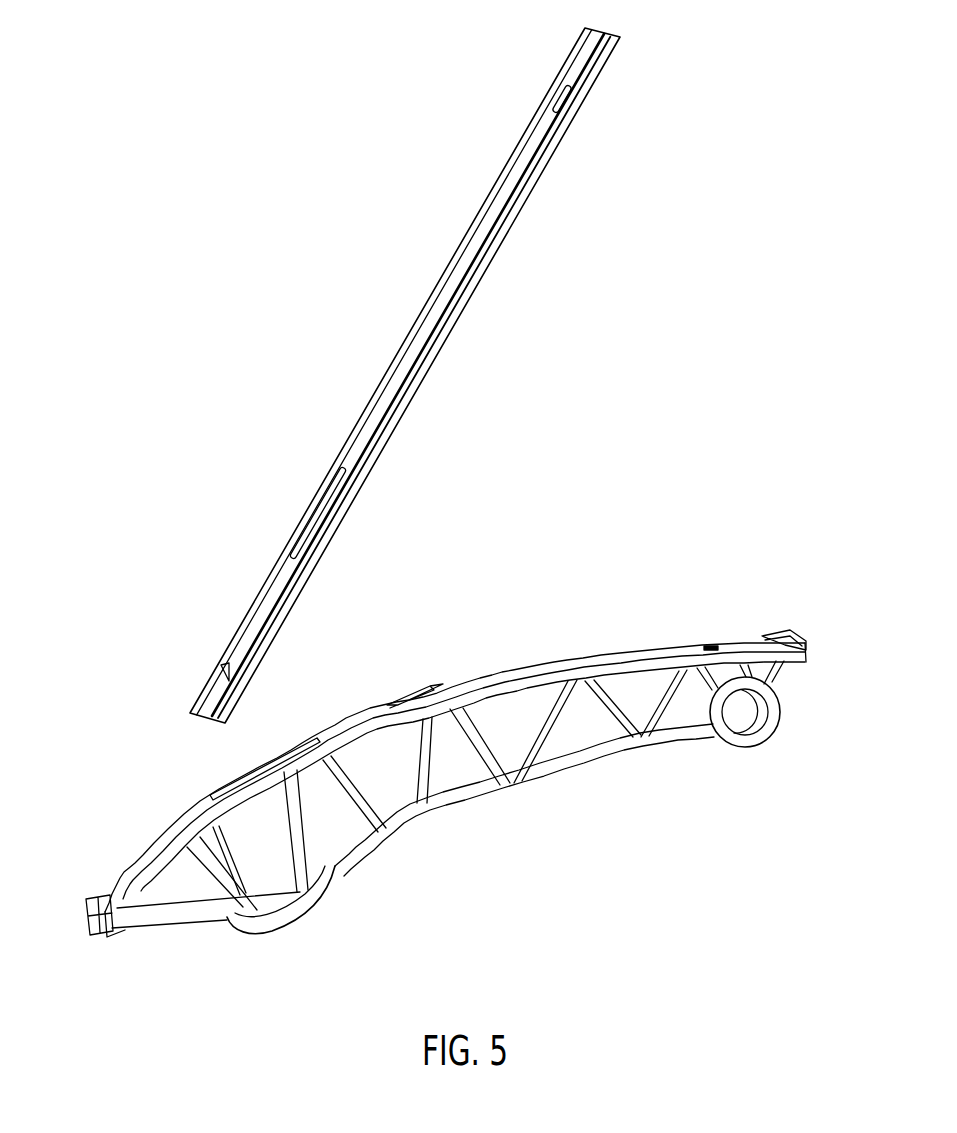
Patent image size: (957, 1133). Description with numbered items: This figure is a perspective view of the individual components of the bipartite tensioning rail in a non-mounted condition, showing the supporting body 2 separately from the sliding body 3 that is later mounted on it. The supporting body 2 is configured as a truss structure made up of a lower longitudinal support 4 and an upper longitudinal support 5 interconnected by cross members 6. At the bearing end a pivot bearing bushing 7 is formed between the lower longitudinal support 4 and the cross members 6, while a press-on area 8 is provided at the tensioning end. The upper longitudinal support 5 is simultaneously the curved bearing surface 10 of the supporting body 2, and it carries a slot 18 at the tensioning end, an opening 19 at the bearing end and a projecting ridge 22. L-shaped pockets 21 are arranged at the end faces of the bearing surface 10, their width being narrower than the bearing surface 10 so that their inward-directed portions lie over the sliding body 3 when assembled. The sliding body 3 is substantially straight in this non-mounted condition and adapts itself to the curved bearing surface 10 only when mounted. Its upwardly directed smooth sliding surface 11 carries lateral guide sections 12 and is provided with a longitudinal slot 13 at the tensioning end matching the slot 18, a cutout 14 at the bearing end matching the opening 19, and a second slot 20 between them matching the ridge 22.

The supporting body 2 is at (652, 606).
The sliding body 3 is at (592, 184).
The lower longitudinal support 4 is at (660, 752).
The upper longitudinal support 5 is at (520, 690).
The cross members 6 is at (430, 778).
The pivot bearing bushing 7 is at (748, 718).
The press-on area 8 is at (318, 898).
The bearing surface 10 is at (549, 666).
The sliding surface 11 is at (223, 675).
The guide sections 12 is at (488, 222).
The longitudinal slot 13 is at (310, 528).
The cutout 14 is at (560, 105).
The slot 18 is at (225, 790).
The opening 19 is at (712, 646).
The second slot 20 is at (402, 368).
The pockets 21 is at (786, 636).
The ridge 22 is at (412, 688).